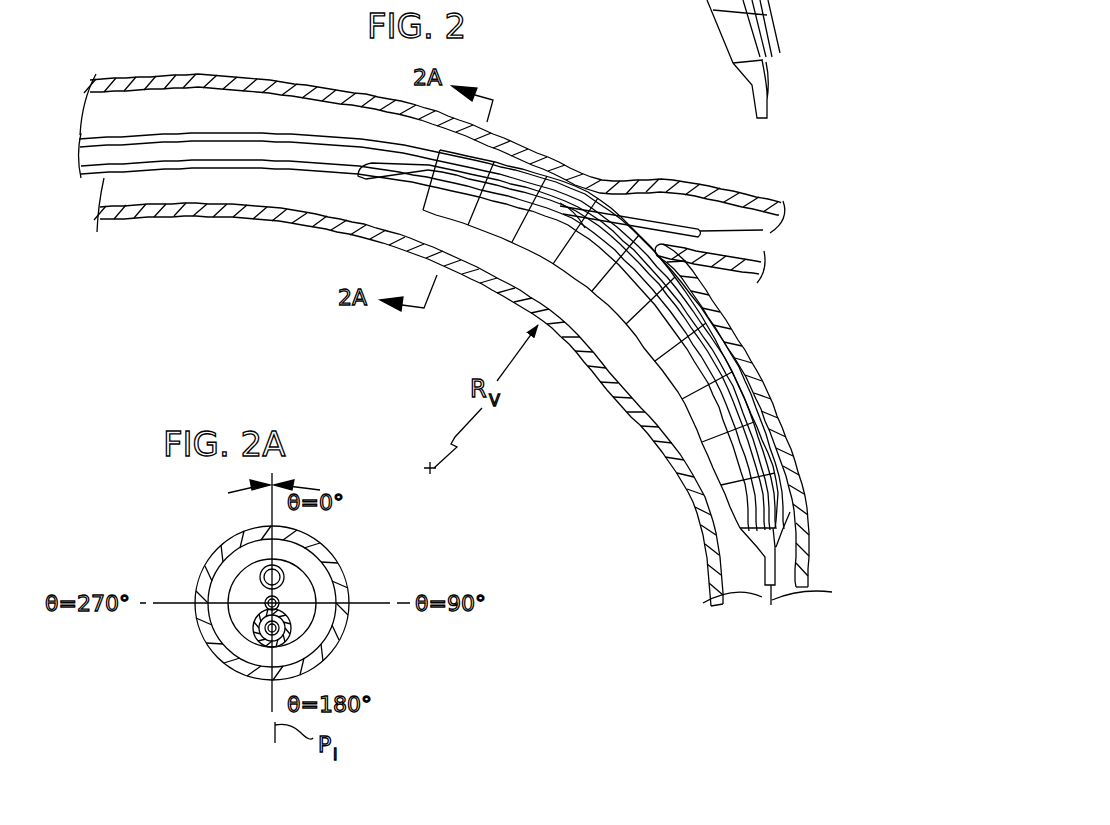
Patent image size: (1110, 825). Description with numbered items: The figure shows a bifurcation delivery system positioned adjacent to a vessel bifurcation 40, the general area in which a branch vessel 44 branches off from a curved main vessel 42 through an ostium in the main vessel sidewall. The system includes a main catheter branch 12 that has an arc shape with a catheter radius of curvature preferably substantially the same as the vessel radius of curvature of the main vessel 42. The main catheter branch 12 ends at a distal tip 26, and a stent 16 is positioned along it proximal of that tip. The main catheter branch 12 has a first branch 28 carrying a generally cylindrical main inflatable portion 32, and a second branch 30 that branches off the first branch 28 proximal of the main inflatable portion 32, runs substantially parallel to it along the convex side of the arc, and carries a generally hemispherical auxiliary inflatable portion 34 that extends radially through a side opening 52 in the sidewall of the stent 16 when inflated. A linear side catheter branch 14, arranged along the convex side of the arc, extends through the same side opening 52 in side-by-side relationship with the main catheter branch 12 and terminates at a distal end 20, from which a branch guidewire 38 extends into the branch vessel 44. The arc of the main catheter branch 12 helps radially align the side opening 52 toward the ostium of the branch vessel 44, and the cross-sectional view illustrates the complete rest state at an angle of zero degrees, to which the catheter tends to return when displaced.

In FIG. 2, the main catheter branch 12 is at (291, 183).
In FIG. 2, the side catheter branch 14 is at (293, 128).
In FIG. 2A, the side catheter branch 14 is at (289, 569).
In FIG. 2, the stent 16 is at (482, 240).
In FIG. 2A, the stent 16 is at (322, 584).
In FIG. 2, the distal end 20 is at (730, 204).
In FIG. 2, the distal tip 26 is at (767, 112).
In FIG. 2, the first branch 28 is at (392, 201).
In FIG. 2A, the first branch 28 is at (300, 634).
In FIG. 2, the second branch 30 is at (383, 158).
In FIG. 2A, the second branch 30 is at (287, 604).
In FIG. 2, the main inflatable portion 32 is at (414, 195).
In FIG. 2, the auxiliary inflatable portion 34 is at (575, 226).
In FIG. 2, the guidewire 38 is at (746, 236).
In FIG. 2, the vessel bifurcation 40 is at (712, 273).
In FIG. 2, the main vessel 42 is at (202, 220).
In FIG. 2, the branch vessel 44 is at (673, 188).
In FIG. 2, the side opening 52 is at (588, 182).